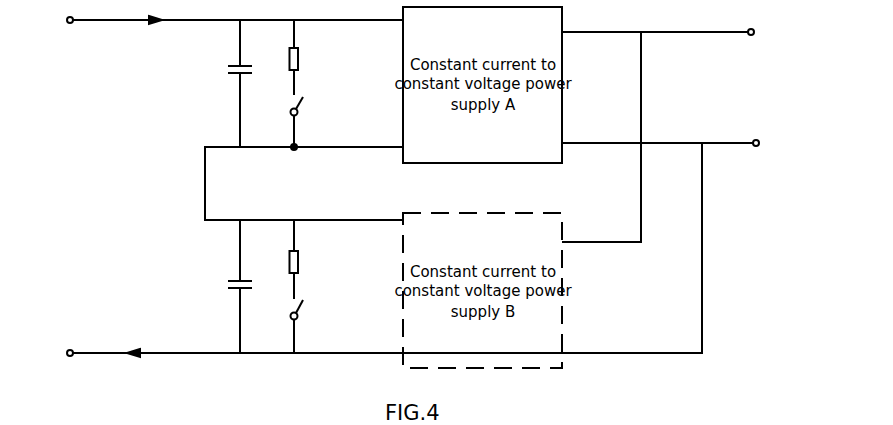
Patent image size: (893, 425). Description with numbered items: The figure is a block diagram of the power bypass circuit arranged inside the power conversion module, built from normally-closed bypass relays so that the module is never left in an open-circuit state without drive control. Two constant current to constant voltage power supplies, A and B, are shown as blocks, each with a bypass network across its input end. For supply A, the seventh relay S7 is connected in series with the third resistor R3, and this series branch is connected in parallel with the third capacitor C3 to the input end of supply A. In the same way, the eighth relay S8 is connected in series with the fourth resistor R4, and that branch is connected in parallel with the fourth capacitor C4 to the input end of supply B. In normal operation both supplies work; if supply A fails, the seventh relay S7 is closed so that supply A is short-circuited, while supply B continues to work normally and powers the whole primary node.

The third capacitor C3 is at (252, 83).
The third resistor R3 is at (307, 57).
The seventh relay S7 is at (307, 123).
The fourth capacitor C4 is at (252, 286).
The fourth resistor R4 is at (307, 259).
The eighth relay S8 is at (307, 326).